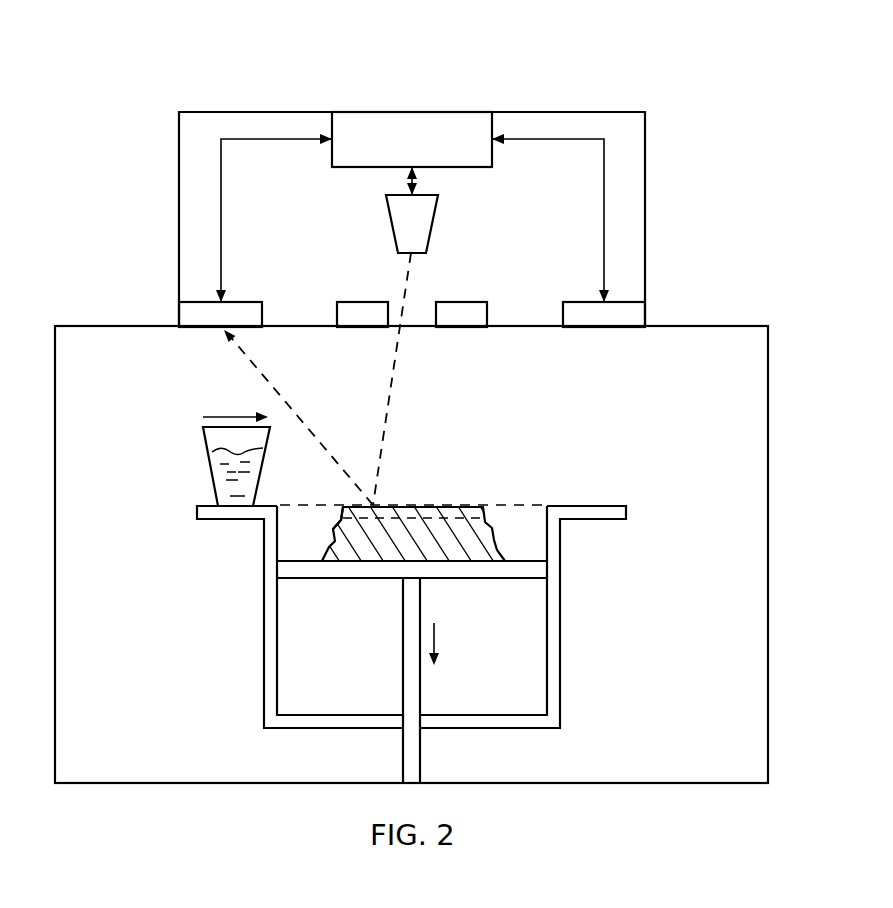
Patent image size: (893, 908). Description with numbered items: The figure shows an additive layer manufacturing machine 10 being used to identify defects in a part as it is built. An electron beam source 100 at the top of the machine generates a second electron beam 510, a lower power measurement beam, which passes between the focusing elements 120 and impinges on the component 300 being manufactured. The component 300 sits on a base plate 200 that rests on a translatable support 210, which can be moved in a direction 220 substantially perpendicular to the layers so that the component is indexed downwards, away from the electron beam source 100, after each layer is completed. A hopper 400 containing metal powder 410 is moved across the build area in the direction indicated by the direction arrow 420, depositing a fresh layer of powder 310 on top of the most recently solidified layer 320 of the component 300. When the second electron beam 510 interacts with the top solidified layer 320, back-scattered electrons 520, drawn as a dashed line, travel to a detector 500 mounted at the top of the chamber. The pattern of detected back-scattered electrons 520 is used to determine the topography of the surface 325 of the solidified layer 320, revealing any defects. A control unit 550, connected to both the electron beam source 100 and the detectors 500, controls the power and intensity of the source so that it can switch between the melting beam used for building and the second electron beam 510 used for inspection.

The additive layer manufacturing machine 10 is at (703, 250).
The electron beam source 100 is at (410, 220).
The focusing elements 120 is at (362, 315).
The base plate 200 is at (498, 570).
The translatable support 210 is at (412, 708).
The direction 220 is at (459, 644).
The component 300 is at (468, 520).
The layer of powder 310 is at (427, 505).
The layer 320 is at (343, 510).
The surface 325 is at (393, 505).
The hopper 400 is at (205, 437).
The metal powder 410 is at (222, 474).
The direction arrow 420 is at (237, 416).
The detector 500 is at (190, 320).
The second electron beam 510 is at (393, 405).
The back-scattered electrons 520 is at (270, 382).
The control unit 550 is at (457, 132).